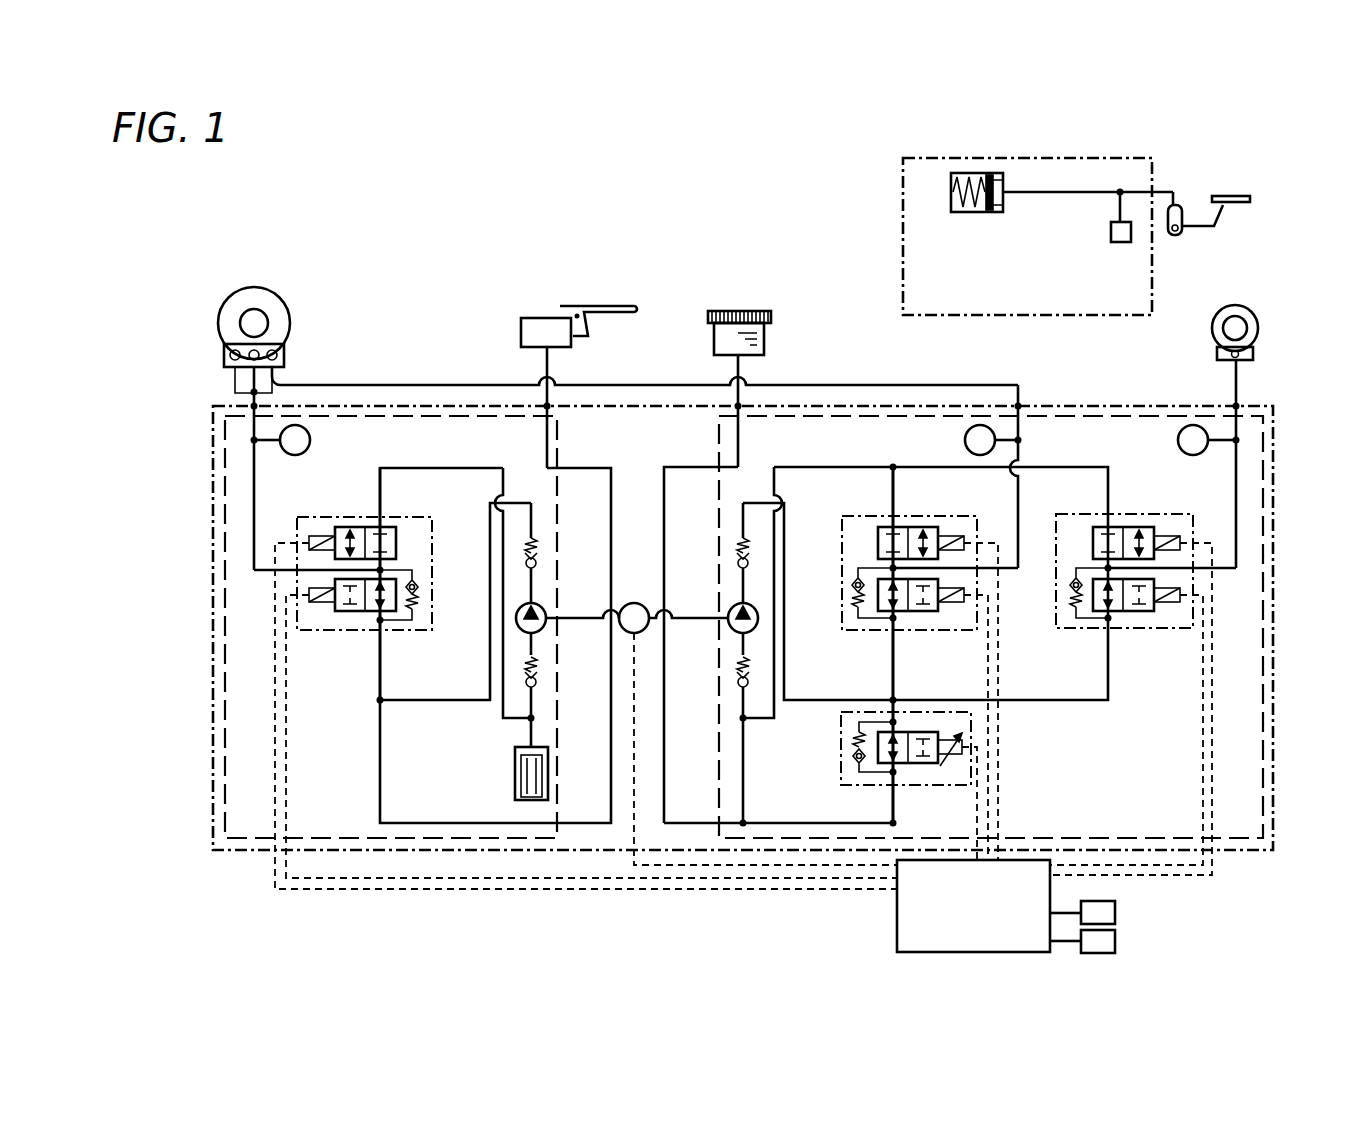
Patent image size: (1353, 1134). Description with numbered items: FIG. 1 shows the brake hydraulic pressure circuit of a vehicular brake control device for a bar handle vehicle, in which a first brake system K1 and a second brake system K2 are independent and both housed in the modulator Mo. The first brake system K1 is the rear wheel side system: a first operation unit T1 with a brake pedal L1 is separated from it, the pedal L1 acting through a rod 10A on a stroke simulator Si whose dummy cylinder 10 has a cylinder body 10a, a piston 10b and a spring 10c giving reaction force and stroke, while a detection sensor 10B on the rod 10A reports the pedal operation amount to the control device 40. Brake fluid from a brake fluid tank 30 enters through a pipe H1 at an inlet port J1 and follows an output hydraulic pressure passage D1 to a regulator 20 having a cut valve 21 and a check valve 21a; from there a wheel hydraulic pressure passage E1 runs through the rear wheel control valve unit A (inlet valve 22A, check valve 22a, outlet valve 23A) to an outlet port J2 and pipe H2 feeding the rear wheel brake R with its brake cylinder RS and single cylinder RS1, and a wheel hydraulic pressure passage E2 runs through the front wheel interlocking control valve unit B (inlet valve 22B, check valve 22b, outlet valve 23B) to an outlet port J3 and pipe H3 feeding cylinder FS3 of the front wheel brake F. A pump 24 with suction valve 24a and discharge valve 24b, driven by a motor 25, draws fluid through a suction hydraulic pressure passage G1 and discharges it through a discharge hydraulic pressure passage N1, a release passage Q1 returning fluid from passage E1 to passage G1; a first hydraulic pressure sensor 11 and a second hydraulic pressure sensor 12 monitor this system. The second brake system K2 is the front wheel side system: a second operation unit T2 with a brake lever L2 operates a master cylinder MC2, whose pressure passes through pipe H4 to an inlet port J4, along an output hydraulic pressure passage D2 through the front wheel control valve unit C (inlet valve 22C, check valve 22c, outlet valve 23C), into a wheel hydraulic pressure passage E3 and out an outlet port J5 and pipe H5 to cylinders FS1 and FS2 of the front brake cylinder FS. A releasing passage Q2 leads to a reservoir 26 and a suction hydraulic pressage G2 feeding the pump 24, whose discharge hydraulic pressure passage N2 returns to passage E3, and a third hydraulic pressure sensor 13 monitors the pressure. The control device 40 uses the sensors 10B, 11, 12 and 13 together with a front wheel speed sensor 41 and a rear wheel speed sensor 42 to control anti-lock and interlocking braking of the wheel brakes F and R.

The wheel brake F is at (255, 292).
The wheel brake R is at (1250, 312).
The brake cylinder FS is at (224, 352).
The cylinder FS1 is at (235, 368).
The cylinder FS2 is at (284, 362).
The cylinder FS3 is at (284, 346).
The brake cylinder RS is at (1253, 352).
The cylinder RS1 is at (1217, 352).
The first operation unit T1 is at (896, 180).
The second operation unit T2 is at (578, 266).
The stroke simulator Si is at (903, 238).
The brake pedal L1 is at (1230, 195).
The brake lever L2 is at (606, 306).
The master cylinder MC2 is at (538, 317).
The brake fluid tank 30 is at (740, 310).
The dummy cylinder 10 is at (1045, 268).
The cylinder body 10a is at (958, 214).
The piston 10b is at (1000, 214).
The spring 10c is at (990, 214).
The rod 10A is at (1064, 194).
The detection sensor 10B is at (1120, 243).
The first hydraulic pressure sensor 11 is at (1178, 440).
The second hydraulic pressure sensor 12 is at (965, 440).
The third hydraulic pressure sensor 13 is at (310, 440).
The pipe H1 is at (748, 366).
The pipe H2 is at (1242, 392).
The pipe H3 is at (918, 384).
The pipe H4 is at (556, 366).
The pipe H5 is at (252, 407).
The inlet port J1 is at (732, 395).
The outlet port J2 is at (1232, 395).
The outlet port J3 is at (1022, 392).
The inlet port J4 is at (540, 395).
The outlet port J5 is at (246, 415).
The wheel hydraulic pressure passage E1 is at (1220, 570).
The wheel hydraulic pressure passage E2 is at (1026, 525).
The wheel hydraulic pressure passage E3 is at (255, 486).
The hydraulic modulator Mo is at (212, 542).
The first brake system K1 is at (1263, 702).
The second brake system K2 is at (225, 722).
The output hydraulic pressure passage D1 is at (686, 822).
The output hydraulic pressure passage D2 is at (578, 822).
The release passage Q1 is at (1074, 468).
The releasing passage Q2 is at (434, 468).
The discharge hydraulic pressure passage N1 is at (768, 498).
The discharge hydraulic pressure passage N2 is at (510, 506).
The suction hydraulic pressure passage G1 is at (750, 808).
The suction hydraulic pressure passage G2 is at (540, 720).
The pump 24 is at (548, 630).
The suction valve 24a is at (540, 672).
The discharge valve 24b is at (540, 552).
The motor 25 is at (634, 602).
The reservoir 26 is at (514, 778).
The rear wheel control valve unit A is at (1074, 514).
The front wheel interlocking control valve unit B is at (862, 516).
The front wheel control valve unit C is at (400, 517).
The outlet valve 23A is at (1130, 527).
The outlet valve 23B is at (914, 527).
The outlet valve 23C is at (366, 527).
The inlet valve 22A is at (1125, 620).
The inlet valve 22B is at (915, 620).
The inlet valve 22C is at (372, 620).
The check valve 22a is at (1066, 604).
The check valve 22b is at (850, 604).
The check valve 22c is at (420, 604).
The regulator 20 is at (841, 770).
The cut valve 21 is at (910, 764).
The check valve 21a is at (852, 742).
The control device 40 is at (973, 906).
The front wheel speed sensor 41 is at (1115, 913).
The rear wheel speed sensor 42 is at (1115, 941).